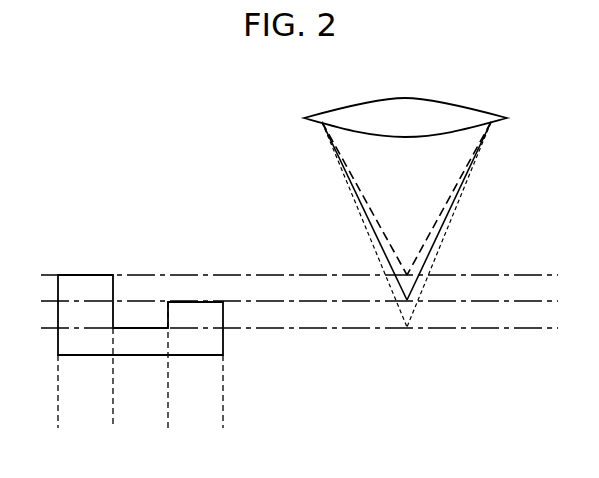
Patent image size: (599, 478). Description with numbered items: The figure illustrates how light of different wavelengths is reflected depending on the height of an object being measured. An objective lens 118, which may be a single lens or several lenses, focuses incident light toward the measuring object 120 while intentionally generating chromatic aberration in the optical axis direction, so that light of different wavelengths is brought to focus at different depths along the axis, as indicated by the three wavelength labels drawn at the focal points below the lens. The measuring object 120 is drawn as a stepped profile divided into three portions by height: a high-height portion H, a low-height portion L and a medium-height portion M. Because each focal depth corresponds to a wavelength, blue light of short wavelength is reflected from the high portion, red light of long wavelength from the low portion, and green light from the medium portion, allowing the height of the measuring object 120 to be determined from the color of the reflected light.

The objective lens 118 is at (408, 107).
The measuring object 120 is at (85, 272).